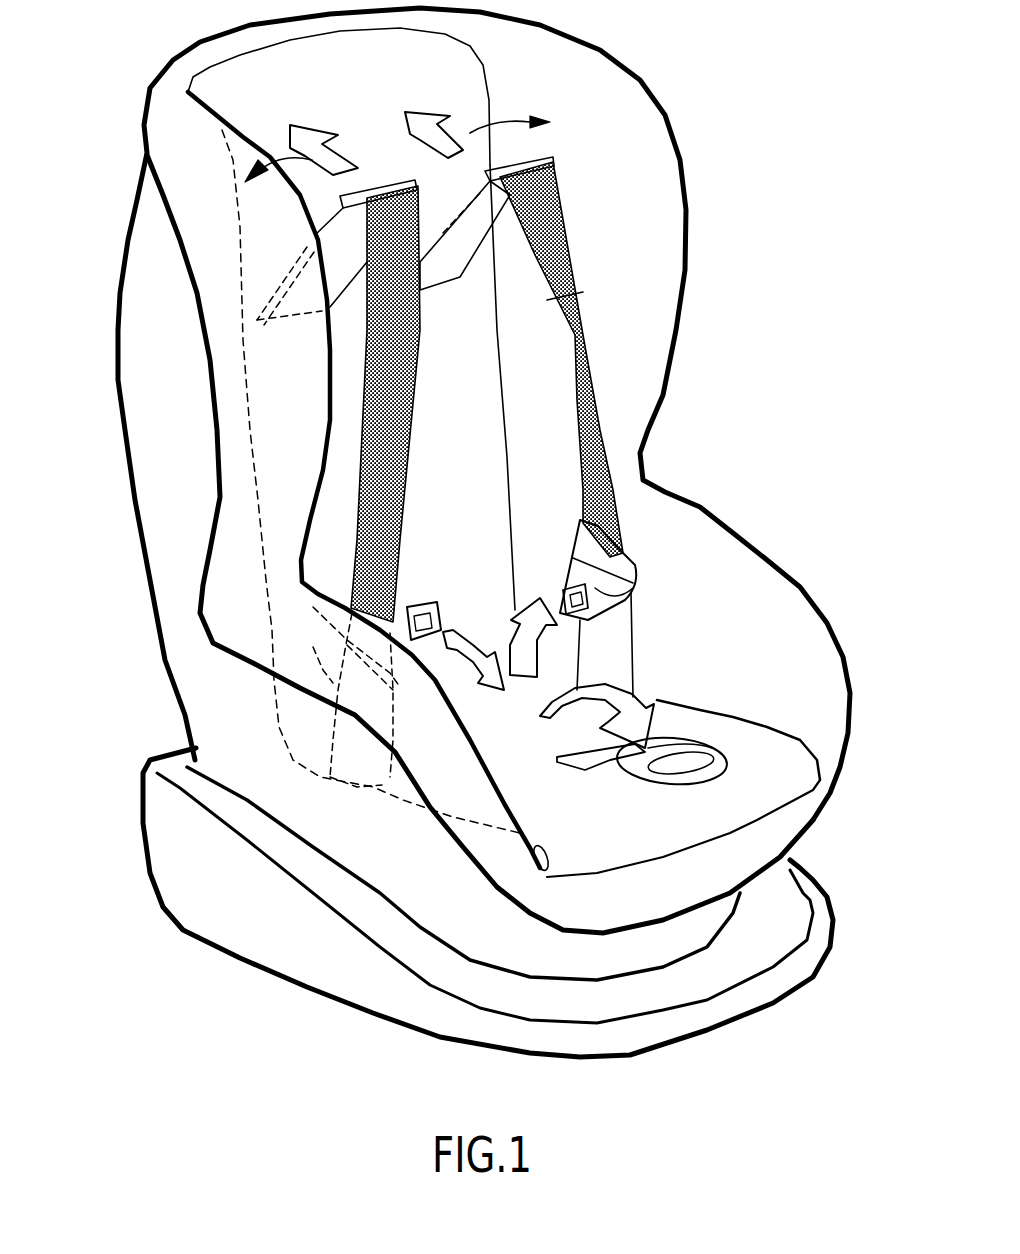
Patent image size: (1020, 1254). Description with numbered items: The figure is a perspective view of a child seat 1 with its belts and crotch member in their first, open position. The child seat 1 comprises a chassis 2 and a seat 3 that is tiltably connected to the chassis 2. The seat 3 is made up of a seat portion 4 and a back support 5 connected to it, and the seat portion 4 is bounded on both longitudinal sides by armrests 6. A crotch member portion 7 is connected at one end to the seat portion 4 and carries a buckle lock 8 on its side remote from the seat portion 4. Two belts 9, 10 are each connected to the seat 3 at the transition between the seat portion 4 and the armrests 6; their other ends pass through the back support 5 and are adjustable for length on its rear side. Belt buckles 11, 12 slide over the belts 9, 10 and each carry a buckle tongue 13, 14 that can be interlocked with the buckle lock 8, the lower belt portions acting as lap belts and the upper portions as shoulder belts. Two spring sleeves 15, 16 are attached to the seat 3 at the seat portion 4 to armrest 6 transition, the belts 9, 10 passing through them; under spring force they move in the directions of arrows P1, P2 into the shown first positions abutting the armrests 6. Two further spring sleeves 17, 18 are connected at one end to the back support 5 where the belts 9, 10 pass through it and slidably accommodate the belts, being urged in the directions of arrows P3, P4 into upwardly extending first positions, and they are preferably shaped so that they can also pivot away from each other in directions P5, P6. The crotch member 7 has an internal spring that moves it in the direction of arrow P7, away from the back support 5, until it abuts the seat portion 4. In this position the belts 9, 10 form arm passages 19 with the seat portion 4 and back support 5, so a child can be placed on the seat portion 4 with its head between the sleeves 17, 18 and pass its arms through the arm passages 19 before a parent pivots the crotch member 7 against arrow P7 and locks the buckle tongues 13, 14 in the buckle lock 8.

The child seat 1 is at (737, 213).
The chassis 2 is at (300, 943).
The seat 3 is at (127, 608).
The seat portion 4 is at (515, 738).
The back support 5 is at (483, 470).
The armrests 6 is at (783, 607).
The crotch member portion 7 is at (600, 760).
The buckle lock 8 is at (691, 770).
The belt 9 is at (390, 423).
The belt 10 is at (603, 420).
The belt buckle 11 is at (342, 691).
The belt buckle 12 is at (623, 553).
The buckle tongue 13 is at (404, 605).
The buckle tongue 14 is at (633, 587).
The spring sleeve 15 is at (308, 654).
The spring sleeve 16 is at (607, 648).
The spring sleeve 17 is at (337, 241).
The spring sleeve 18 is at (493, 213).
The arm passages 19 is at (343, 343).
The arrow P1 is at (462, 632).
The arrow P2 is at (540, 598).
The arrow P3 is at (325, 127).
The arrow P4 is at (427, 117).
The direction P5 is at (243, 141).
The direction P6 is at (531, 113).
The arrow P7 is at (633, 698).